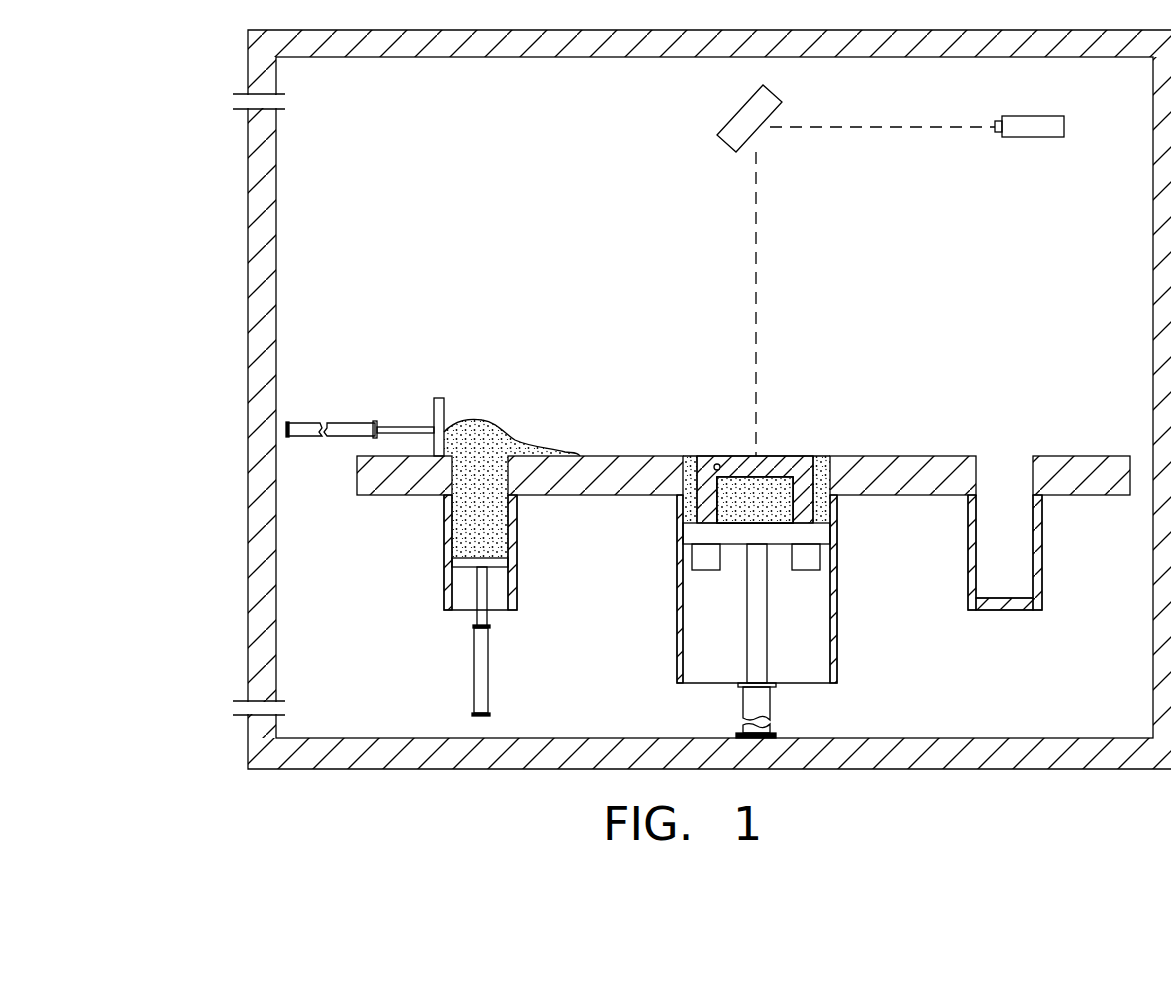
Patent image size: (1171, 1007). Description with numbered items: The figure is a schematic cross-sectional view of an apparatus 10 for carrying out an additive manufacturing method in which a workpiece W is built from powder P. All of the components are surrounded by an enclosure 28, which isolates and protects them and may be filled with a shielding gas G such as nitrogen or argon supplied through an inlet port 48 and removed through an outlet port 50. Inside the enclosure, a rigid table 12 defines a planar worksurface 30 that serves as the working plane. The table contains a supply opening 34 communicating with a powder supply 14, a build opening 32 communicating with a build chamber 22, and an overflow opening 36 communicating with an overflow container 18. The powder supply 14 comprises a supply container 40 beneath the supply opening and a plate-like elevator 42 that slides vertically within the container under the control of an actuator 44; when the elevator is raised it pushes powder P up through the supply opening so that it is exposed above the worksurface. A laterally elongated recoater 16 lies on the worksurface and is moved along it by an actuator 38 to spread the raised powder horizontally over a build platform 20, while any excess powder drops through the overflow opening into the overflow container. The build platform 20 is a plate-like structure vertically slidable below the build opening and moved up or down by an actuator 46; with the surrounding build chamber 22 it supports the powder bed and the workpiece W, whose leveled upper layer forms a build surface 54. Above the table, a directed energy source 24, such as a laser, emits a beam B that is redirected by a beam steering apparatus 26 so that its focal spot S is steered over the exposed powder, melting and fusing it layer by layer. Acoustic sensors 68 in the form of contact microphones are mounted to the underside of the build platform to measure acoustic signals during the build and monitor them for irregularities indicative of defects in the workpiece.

The apparatus 10 is at (232, 145).
The table 12 is at (1058, 483).
The powder supply 14 is at (578, 552).
The recoater 16 is at (436, 398).
The overflow container 18 is at (968, 560).
The build platform 20 is at (700, 534).
The build chamber 22 is at (678, 628).
The directed energy source 24 is at (1043, 116).
The beam steering apparatus 26 is at (735, 112).
The enclosure 28 is at (500, 58).
The worksurface 30 is at (1068, 449).
The build opening 32 is at (823, 463).
The supply opening 34 is at (503, 458).
The overflow opening 36 is at (1033, 478).
The actuator 38 is at (352, 423).
The supply container 40 is at (517, 528).
The elevator 42 is at (492, 567).
The actuator 44 is at (485, 643).
The actuator 46 is at (763, 703).
The inlet port 48 is at (284, 106).
The outlet port 50 is at (285, 703).
The build surface 54 is at (693, 440).
The acoustic sensor 68 is at (705, 567).
The shielding gas G is at (470, 290).
The beam B is at (755, 277).
The powder P is at (490, 433).
The focal spot S is at (753, 456).
The workpiece W is at (803, 507).